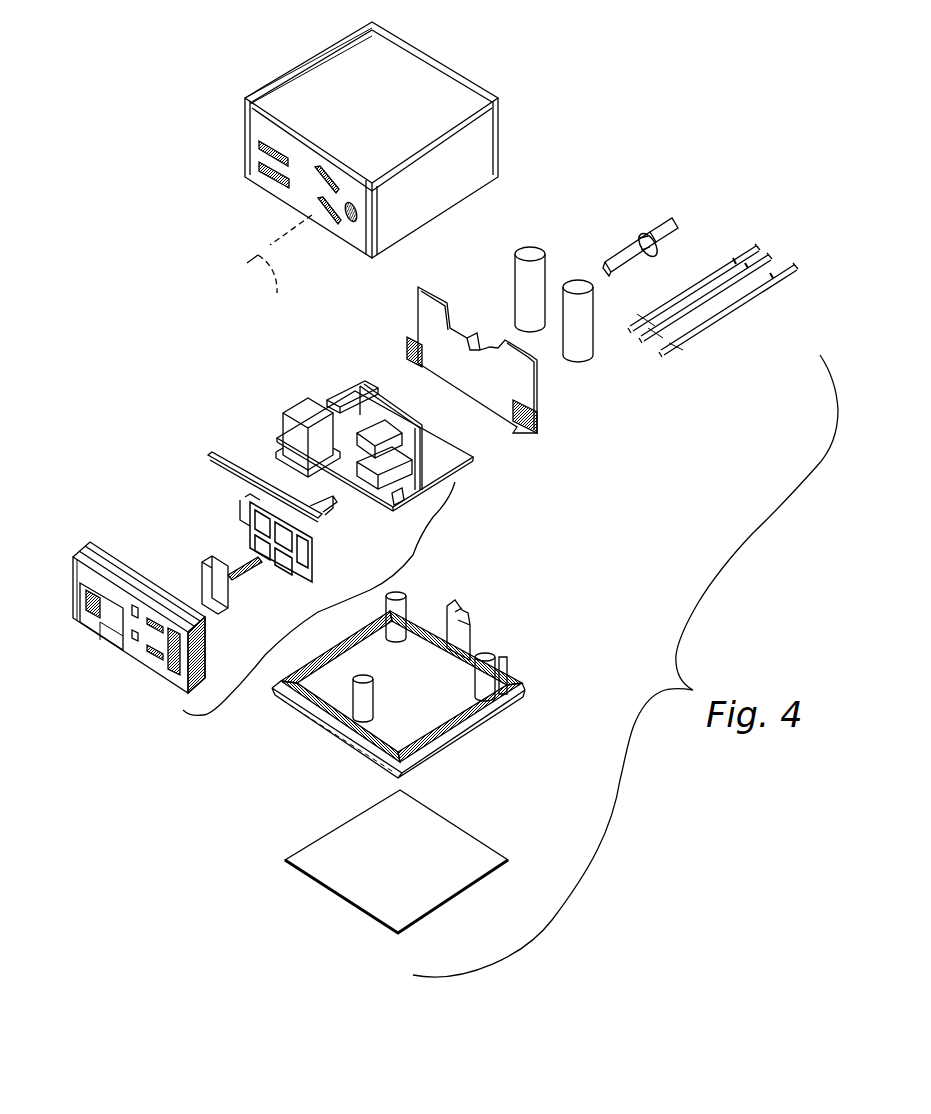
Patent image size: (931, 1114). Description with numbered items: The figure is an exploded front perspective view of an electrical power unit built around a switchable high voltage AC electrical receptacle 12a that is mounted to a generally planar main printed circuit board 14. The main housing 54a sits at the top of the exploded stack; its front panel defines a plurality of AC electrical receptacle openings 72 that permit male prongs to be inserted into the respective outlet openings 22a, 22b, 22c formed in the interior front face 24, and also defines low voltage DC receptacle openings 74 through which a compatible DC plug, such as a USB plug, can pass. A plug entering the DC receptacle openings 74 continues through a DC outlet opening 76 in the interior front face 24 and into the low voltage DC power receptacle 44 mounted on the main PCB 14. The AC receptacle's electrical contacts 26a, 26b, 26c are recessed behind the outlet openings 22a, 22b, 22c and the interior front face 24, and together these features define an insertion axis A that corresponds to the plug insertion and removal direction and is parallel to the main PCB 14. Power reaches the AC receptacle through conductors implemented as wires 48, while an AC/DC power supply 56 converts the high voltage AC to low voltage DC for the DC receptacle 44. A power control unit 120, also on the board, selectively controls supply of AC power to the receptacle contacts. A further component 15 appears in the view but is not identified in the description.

The main housing 54a is at (425, 68).
The low voltage DC receptacle openings 74 is at (259, 175).
The AC electrical receptacle openings 72 is at (347, 222).
The insertion axis A is at (279, 264).
The AC/DC power supply 56 is at (593, 226).
The wires 48 is at (723, 350).
The shield bracket 15 is at (400, 468).
The main printed circuit board 14 is at (458, 468).
The low voltage DC power receptacle 44 is at (303, 407).
The power control unit 120 is at (343, 388).
The electrical contact 26a is at (380, 398).
The electrical contact 26c is at (388, 430).
The electrical contact 26b is at (358, 480).
The high voltage AC electrical receptacle 12a is at (413, 545).
The interior front face 24 is at (117, 555).
The DC outlet opening 76 is at (98, 624).
The outlet opening 22a is at (167, 605).
The outlet opening 22b is at (150, 658).
The outlet opening 22c is at (182, 657).